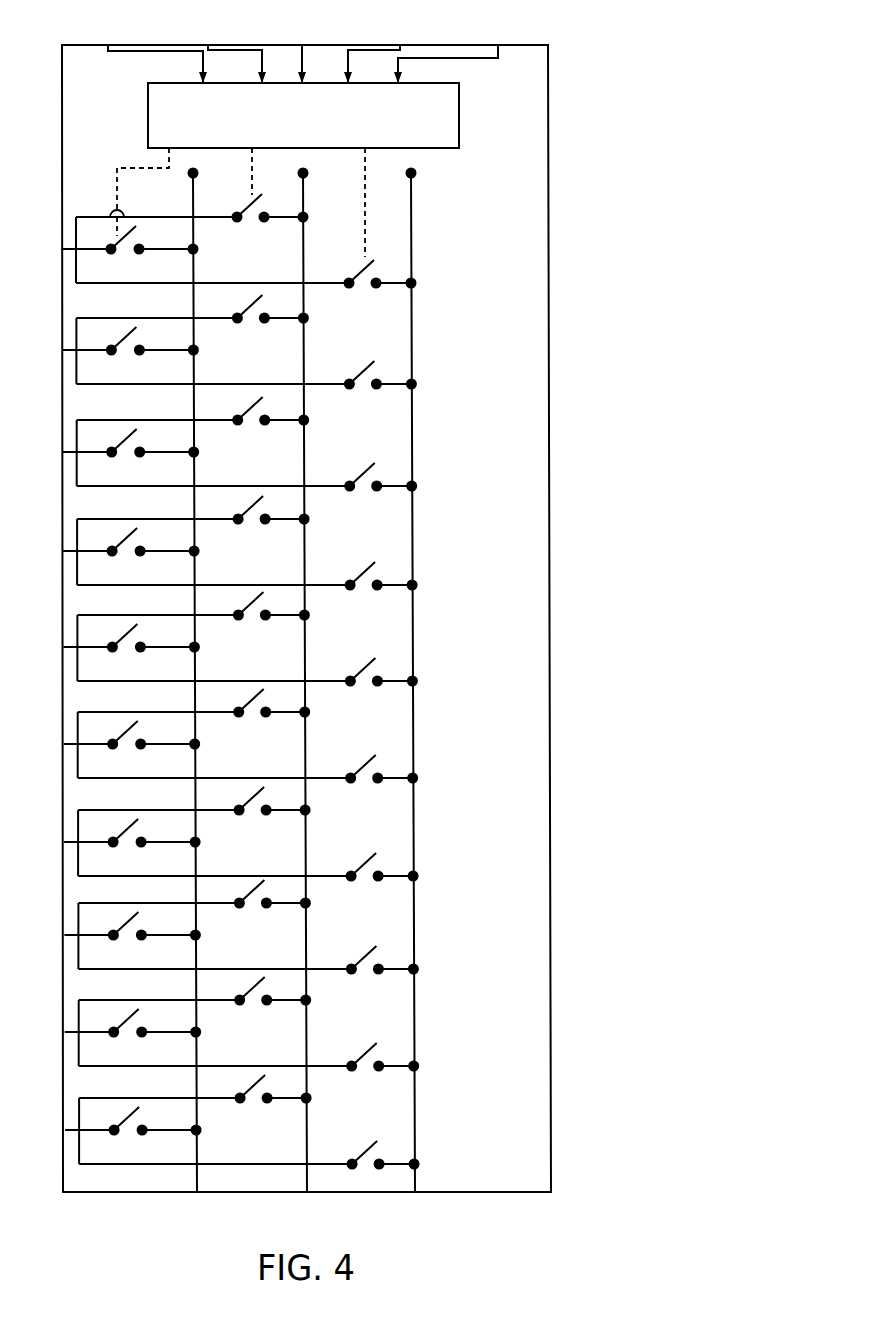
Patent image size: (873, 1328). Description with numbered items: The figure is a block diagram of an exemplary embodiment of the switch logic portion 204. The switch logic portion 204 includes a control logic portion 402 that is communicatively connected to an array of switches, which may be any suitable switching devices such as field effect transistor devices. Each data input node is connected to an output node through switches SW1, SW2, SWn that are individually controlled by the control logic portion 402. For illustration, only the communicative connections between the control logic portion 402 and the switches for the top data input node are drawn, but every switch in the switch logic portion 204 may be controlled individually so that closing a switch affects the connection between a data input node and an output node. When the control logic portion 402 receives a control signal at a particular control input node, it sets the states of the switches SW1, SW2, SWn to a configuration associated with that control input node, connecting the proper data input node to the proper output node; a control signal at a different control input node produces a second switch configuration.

The switch logic portion 204 is at (316, 619).
The control logic portion 402 is at (459, 116).
The switch SW1 is at (138, 215).
The switch SW2 is at (251, 202).
The switch SWn is at (363, 231).